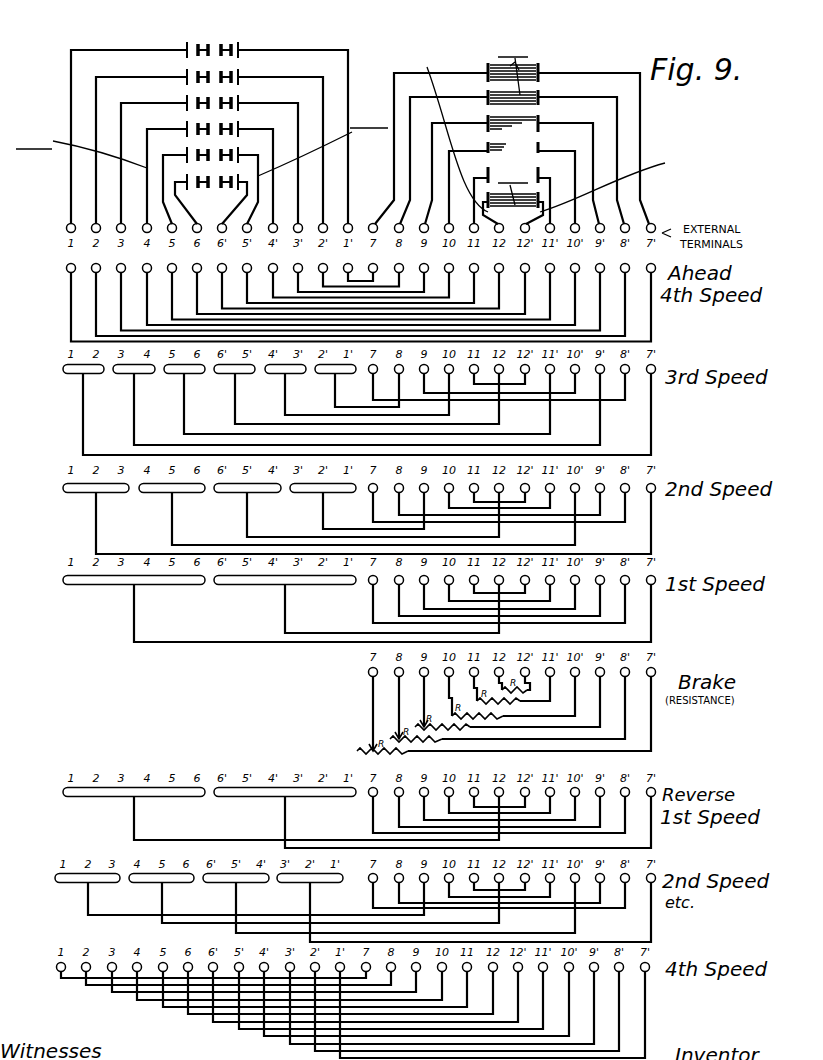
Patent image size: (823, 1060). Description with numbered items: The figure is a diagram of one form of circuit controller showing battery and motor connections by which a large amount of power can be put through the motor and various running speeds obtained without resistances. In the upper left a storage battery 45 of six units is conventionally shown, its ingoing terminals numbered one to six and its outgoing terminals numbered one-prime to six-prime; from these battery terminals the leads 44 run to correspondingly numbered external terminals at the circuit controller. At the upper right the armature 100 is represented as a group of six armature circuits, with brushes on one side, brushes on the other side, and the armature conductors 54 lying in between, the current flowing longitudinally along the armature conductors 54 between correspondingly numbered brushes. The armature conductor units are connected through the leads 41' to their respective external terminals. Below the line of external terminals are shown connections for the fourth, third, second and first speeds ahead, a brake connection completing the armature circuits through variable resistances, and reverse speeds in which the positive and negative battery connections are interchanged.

The leads 44 is at (202, 137).
The battery 45 is at (202, 117).
The armature 100 is at (532, 118).
The armature conductors 54 is at (513, 123).
The leads 41' is at (532, 134).